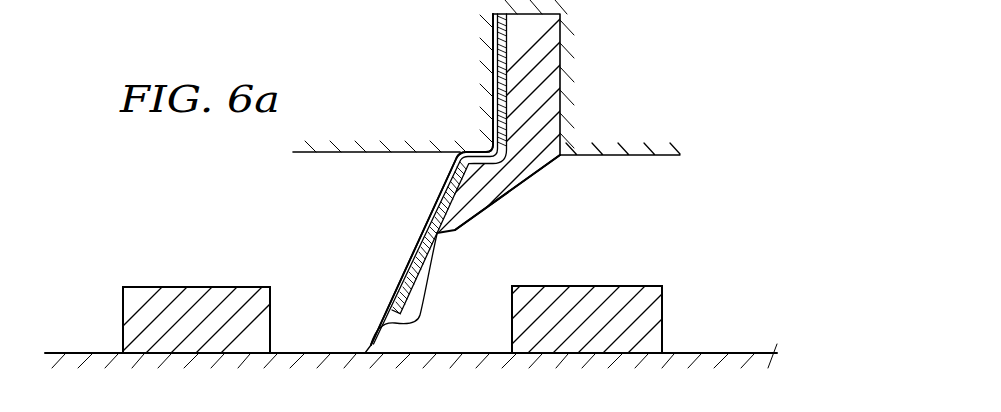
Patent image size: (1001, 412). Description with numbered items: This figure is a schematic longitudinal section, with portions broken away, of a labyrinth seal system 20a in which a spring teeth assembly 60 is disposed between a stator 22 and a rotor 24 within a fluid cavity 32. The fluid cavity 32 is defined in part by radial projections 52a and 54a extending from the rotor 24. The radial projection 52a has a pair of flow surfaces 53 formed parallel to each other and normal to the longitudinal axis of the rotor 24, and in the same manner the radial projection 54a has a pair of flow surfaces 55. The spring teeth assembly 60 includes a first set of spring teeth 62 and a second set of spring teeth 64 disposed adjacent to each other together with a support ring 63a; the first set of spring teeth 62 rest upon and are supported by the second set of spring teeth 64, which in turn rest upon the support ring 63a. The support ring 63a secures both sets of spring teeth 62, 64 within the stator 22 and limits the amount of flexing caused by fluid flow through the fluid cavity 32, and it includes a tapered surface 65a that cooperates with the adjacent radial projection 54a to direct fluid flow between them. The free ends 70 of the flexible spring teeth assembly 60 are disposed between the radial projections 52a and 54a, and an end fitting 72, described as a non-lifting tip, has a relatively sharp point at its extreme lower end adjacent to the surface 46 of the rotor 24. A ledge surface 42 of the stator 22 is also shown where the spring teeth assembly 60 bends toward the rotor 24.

The labyrinth seal system 20a is at (180, 194).
The stator 22 is at (637, 111).
The rotor 24 is at (411, 403).
The fluid cavity 32 is at (288, 236).
The ledge surface 42 is at (337, 152).
The surface 46 is at (313, 353).
The radial projection 52a is at (180, 305).
The flow surfaces 53 is at (123, 312).
The radial projection 54a is at (587, 317).
The flow surfaces 55 is at (508, 300).
The spring teeth assembly 60 is at (428, 182).
The first set of spring teeth 62 is at (420, 239).
The support ring 63a is at (530, 172).
The second set of spring teeth 64 is at (432, 246).
The tapered surface 65a is at (490, 208).
The free ends 70 is at (362, 350).
The end fitting 72 is at (423, 302).